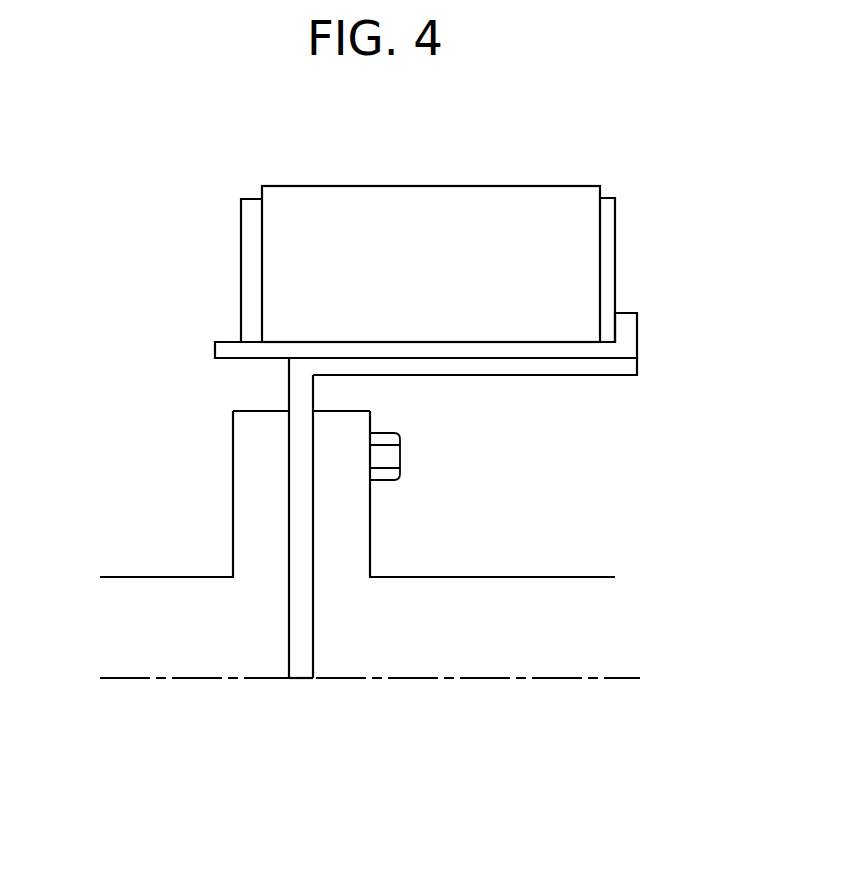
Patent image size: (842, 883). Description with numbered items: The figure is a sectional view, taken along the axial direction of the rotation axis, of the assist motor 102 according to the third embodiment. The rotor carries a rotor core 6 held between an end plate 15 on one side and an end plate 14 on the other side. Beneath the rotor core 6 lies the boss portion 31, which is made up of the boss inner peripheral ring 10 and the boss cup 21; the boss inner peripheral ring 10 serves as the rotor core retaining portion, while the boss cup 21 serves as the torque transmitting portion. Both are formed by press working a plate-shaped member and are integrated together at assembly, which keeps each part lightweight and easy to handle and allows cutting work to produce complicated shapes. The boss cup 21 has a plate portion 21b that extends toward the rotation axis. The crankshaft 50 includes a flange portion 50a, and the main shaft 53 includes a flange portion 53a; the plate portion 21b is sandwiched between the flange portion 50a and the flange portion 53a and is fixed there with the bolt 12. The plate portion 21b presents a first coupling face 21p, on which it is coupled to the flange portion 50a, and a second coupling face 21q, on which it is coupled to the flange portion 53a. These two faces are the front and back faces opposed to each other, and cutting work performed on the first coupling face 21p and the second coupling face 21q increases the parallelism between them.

The assist motor 102 is at (400, 432).
The rotor core 6 is at (534, 202).
The end plate 15 is at (252, 237).
The end plate 14 is at (605, 236).
The boss inner peripheral ring 10 is at (637, 330).
The boss cup 21 is at (417, 550).
The boss portion 31 is at (448, 528).
The plate portion 21b is at (289, 380).
The first coupling face 21p is at (288, 650).
The second coupling face 21q is at (313, 650).
The crankshaft 50 is at (194, 500).
The flange portion 50a is at (233, 422).
The main shaft 53 is at (464, 496).
The flange portion 53a is at (370, 417).
The bolt 12 is at (390, 457).